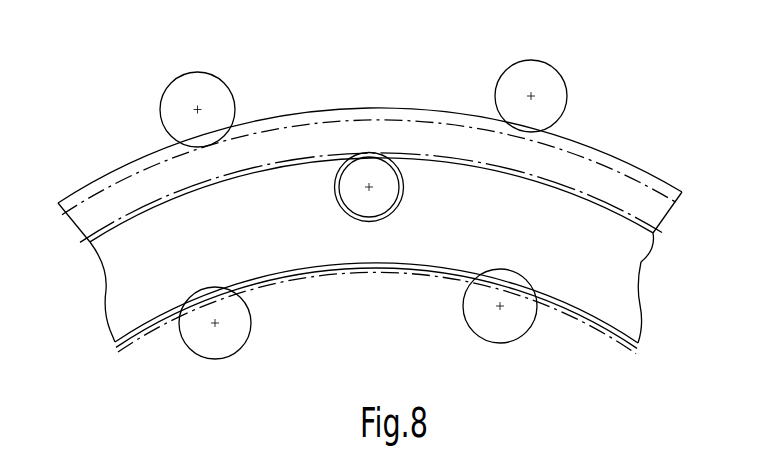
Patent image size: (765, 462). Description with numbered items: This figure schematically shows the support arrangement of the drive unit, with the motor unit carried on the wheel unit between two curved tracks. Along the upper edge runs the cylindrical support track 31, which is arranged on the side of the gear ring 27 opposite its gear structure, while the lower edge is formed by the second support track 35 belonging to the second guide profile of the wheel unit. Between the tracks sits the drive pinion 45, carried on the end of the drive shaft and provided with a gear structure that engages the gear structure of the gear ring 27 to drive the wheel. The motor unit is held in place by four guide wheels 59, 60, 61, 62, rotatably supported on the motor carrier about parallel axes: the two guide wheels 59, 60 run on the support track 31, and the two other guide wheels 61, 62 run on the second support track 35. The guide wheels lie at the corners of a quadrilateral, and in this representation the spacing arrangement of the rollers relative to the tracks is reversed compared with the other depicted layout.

The gear ring 27 is at (311, 157).
The support track 31 is at (343, 118).
The second support track 35 is at (360, 250).
The drive pinion 45 is at (403, 190).
The guide wheel 59 is at (183, 74).
The guide wheel 60 is at (530, 72).
The guide wheel 61 is at (205, 343).
The guide wheel 62 is at (523, 325).